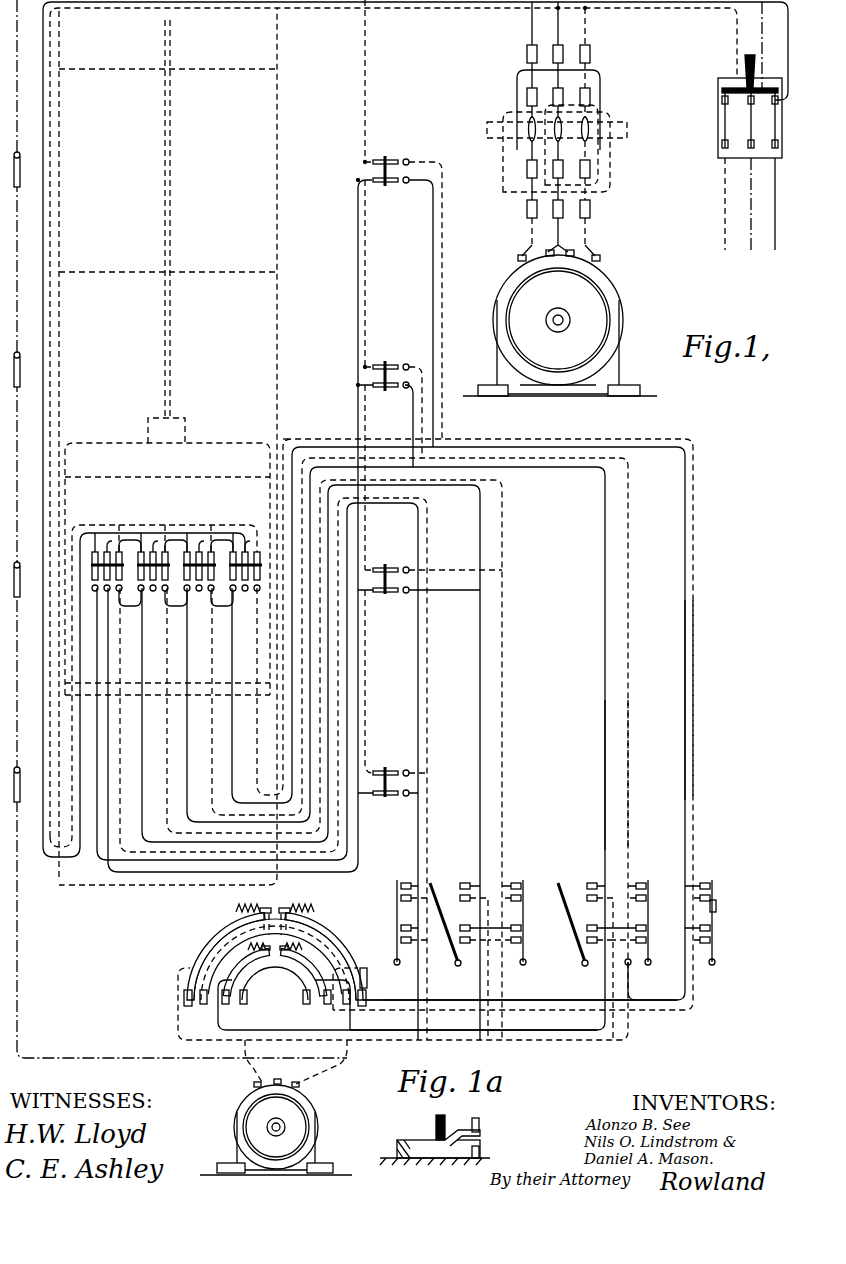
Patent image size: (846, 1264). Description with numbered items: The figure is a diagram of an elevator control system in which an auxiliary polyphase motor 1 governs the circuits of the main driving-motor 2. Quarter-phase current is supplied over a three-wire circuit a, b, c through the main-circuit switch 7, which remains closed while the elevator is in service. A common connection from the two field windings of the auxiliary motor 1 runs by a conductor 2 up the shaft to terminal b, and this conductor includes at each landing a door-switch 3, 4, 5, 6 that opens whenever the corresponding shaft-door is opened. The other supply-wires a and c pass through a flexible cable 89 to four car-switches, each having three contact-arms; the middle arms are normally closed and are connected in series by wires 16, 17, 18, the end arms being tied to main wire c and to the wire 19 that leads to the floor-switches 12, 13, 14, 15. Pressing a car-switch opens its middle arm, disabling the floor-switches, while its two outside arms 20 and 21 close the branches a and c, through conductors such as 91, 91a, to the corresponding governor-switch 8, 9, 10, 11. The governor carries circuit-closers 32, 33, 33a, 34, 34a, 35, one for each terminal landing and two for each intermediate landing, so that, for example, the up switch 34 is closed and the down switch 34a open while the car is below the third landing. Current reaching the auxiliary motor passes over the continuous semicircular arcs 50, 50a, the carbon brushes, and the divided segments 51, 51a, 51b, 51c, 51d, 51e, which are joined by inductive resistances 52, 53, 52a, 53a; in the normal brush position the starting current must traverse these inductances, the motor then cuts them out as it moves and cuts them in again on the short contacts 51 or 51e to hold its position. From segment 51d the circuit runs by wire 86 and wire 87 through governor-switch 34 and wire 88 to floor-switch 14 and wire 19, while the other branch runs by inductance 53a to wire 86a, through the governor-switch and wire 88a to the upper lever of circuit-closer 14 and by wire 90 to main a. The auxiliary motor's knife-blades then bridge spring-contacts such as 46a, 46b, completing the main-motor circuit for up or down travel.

The auxiliary motor 1 is at (310, 1112).
The main driving-motor 2 is at (108, 1058).
The door-switch 3 is at (108, 712).
The door-switch 4 is at (20, 585).
The door-switch 5 is at (24, 369).
The door-switch 6 is at (24, 169).
The main-circuit switch 7 is at (718, 121).
The governor-switch 8 is at (409, 911).
The governor-switch 9 is at (473, 949).
The governor-switch 10 is at (597, 950).
The governor-switch 11 is at (703, 908).
The floor-switch 12 is at (392, 771).
The floor-switch 13 is at (430, 567).
The floor-switch 14 is at (390, 414).
The floor-switch 15 is at (400, 293).
The wire 16 is at (122, 548).
The wire 17 is at (168, 548).
The wire 18 is at (214, 548).
The wire 19 is at (358, 430).
The outside contact-arm 20 is at (95, 595).
The outside contact-arm 21 is at (119, 595).
The circuit-closer 32 is at (397, 884).
The circuit-closer 33 is at (526, 882).
The circuit-closer 33a is at (438, 878).
The up switch 34 is at (650, 882).
The down switch 34a is at (570, 938).
The circuit-closer 35 is at (716, 906).
The spring-contact 46a is at (560, 32).
The spring-contact 46b is at (594, 82).
The semicircular contact 50 is at (203, 1000).
The semicircular contact 50a is at (247, 998).
The contact segment 51 is at (185, 980).
The contact segment 51a is at (208, 936).
The contact segment 51b is at (270, 908).
The contact segment 51c is at (286, 910).
The contact segment 51d is at (322, 932).
The contact segment 51e is at (368, 983).
The inductive resistance 52 is at (236, 900).
The inductive resistance 52a is at (250, 946).
The inductive resistance 53 is at (316, 906).
The inductive resistance 53a is at (322, 952).
The wire 86 is at (545, 999).
The wire 86a is at (562, 1031).
The wire 87 is at (628, 985).
The wire 88 is at (604, 755).
The wire 88a is at (629, 755).
The flexible cable 89 is at (43, 620).
The wire 90 is at (363, 112).
The conductor 91 is at (684, 671).
The conductor 91a is at (694, 671).
The supply-wire a is at (722, 217).
The supply-wire b is at (750, 217).
The supply-wire c is at (773, 217).